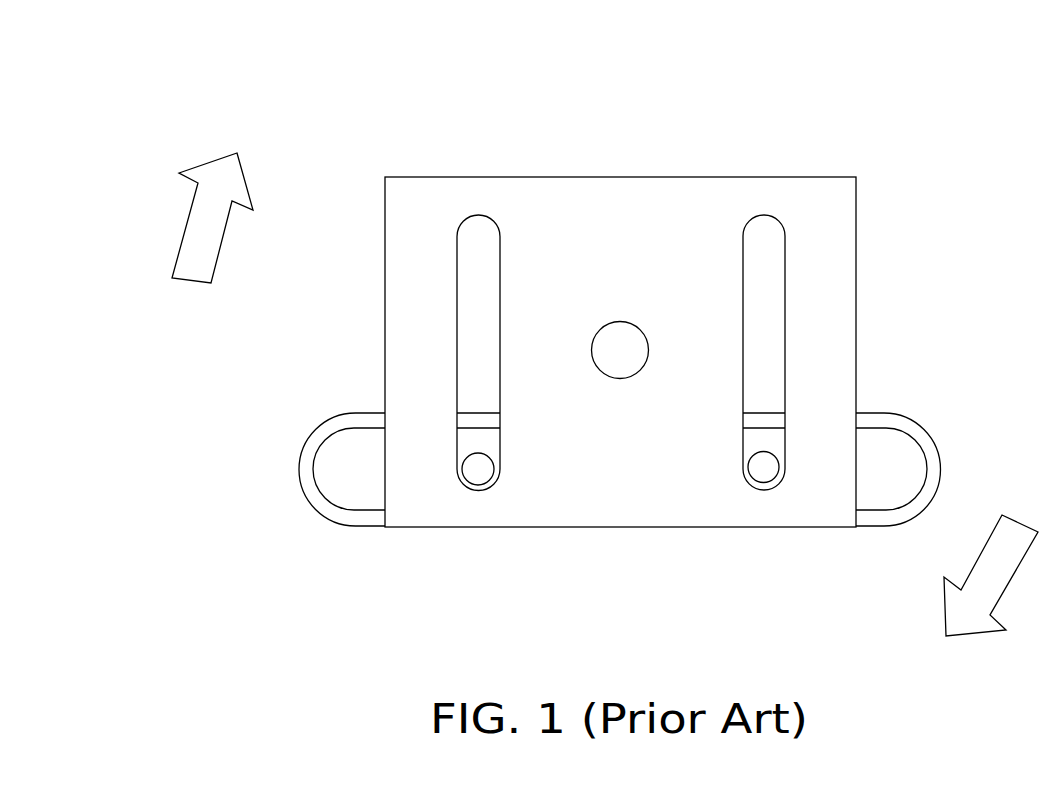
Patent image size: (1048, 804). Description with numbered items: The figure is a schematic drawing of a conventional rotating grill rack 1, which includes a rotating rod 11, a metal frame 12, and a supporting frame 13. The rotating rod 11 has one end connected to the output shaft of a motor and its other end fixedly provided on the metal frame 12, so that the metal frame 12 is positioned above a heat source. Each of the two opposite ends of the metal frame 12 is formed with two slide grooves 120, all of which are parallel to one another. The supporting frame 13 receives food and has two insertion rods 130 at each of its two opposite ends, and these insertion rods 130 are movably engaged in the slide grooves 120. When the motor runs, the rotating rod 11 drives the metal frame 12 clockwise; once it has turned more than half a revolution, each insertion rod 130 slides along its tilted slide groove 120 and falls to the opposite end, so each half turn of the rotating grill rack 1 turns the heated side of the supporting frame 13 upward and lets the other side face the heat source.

The rotating grill rack 1 is at (667, 326).
The rotating rod 11 is at (623, 355).
The metal frame 12 is at (833, 213).
The supporting frame 13 is at (925, 443).
The slide grooves 120 is at (478, 235).
The insertion rods 130 is at (760, 467).